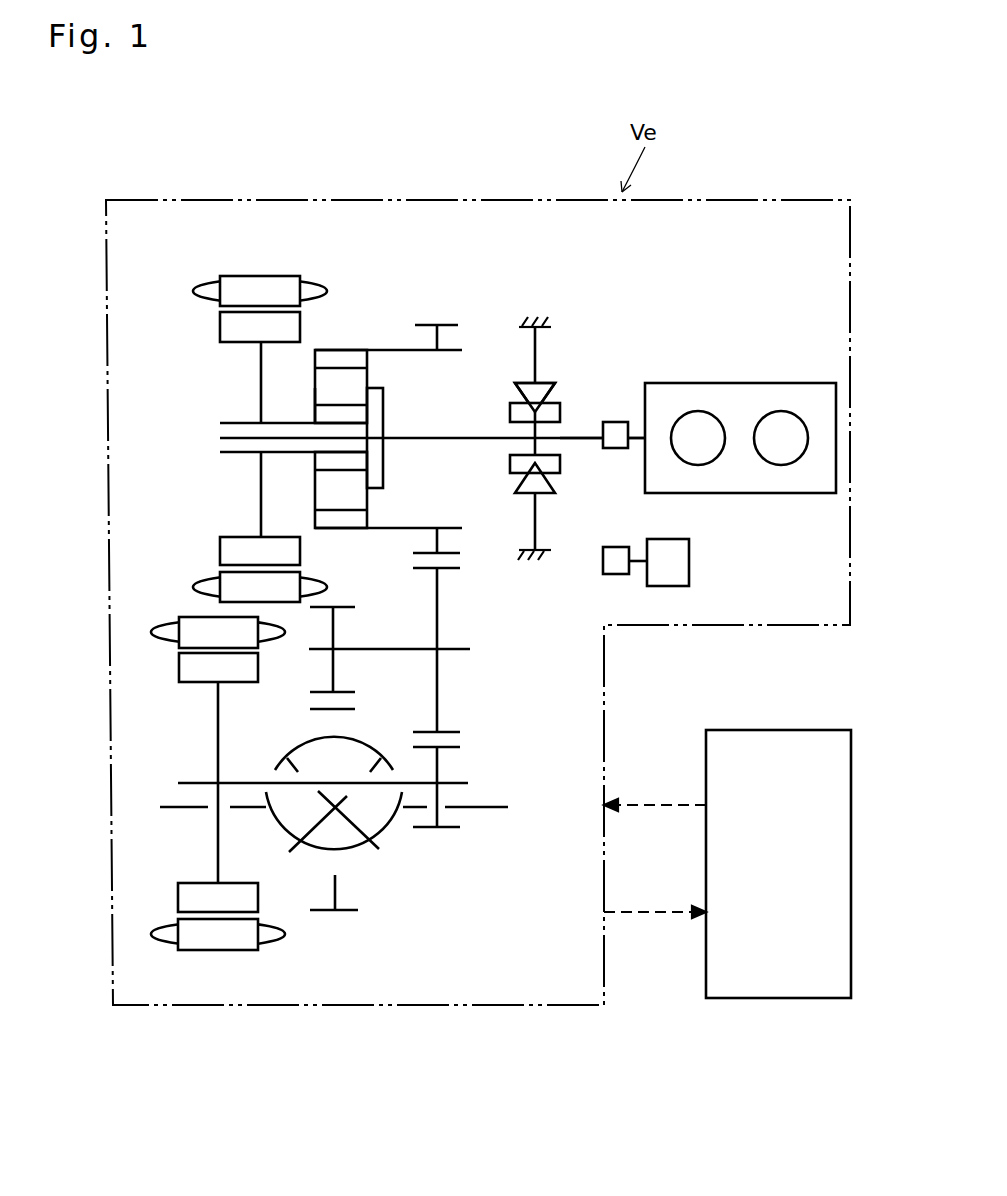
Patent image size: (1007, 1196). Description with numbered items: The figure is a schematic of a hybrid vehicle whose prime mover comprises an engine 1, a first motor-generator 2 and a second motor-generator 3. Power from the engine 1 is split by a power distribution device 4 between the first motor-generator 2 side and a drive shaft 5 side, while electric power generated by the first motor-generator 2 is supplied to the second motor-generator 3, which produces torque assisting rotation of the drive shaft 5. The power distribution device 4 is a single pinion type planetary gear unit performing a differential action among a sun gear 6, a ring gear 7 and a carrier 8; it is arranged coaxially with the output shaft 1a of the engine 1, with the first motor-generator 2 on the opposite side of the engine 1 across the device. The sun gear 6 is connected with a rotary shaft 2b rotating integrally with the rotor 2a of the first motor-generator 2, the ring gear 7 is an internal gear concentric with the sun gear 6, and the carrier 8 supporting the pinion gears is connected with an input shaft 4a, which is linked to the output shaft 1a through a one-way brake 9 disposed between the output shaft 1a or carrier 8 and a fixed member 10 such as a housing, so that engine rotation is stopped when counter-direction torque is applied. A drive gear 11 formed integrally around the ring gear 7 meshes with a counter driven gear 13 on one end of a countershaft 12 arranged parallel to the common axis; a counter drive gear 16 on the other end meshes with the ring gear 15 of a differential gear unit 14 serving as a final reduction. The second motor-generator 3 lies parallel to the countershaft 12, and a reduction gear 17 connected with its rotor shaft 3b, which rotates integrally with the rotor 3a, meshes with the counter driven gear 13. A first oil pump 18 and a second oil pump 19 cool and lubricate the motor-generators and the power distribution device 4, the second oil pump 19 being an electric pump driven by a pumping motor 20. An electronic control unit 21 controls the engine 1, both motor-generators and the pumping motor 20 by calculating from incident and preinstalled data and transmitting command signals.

The engine 1 is at (737, 486).
The output shaft 1a is at (582, 441).
The first motor-generator 2 is at (180, 320).
The rotor 2a is at (222, 556).
The rotary shaft 2b is at (285, 453).
The second motor-generator 3 is at (178, 712).
The rotor 3a is at (178, 897).
The rotor shaft 3b is at (250, 782).
The power distribution device 4 is at (378, 316).
The input shaft 4a is at (452, 434).
The drive shaft 5 is at (168, 805).
The sun gear 6 is at (318, 415).
The ring gear 7 is at (343, 350).
The carrier 8 is at (386, 400).
The one-way brake 9 is at (558, 350).
The fixed member 10 is at (541, 560).
The drive gear 11 is at (428, 322).
The countershaft 12 is at (385, 647).
The counter driven gear 13 is at (421, 567).
The differential gear unit 14 is at (376, 870).
The ring gear 15 is at (320, 912).
The counter drive gear 16 is at (342, 604).
The reduction gear 17 is at (437, 829).
The first oil pump 18 is at (615, 420).
The second oil pump 19 is at (615, 575).
The pumping motor 20 is at (690, 568).
The electronic control unit 21 is at (778, 990).